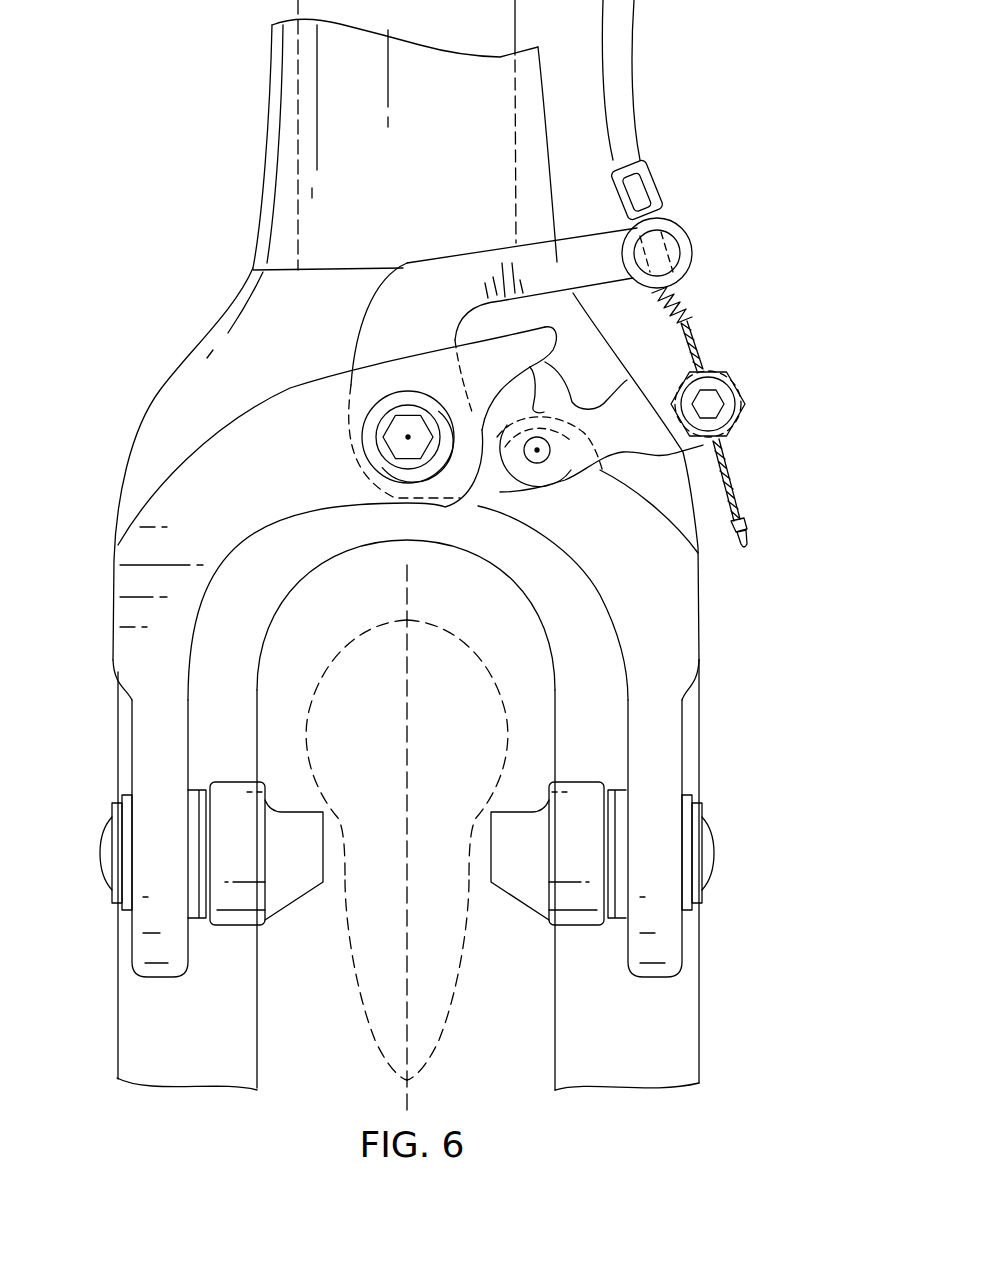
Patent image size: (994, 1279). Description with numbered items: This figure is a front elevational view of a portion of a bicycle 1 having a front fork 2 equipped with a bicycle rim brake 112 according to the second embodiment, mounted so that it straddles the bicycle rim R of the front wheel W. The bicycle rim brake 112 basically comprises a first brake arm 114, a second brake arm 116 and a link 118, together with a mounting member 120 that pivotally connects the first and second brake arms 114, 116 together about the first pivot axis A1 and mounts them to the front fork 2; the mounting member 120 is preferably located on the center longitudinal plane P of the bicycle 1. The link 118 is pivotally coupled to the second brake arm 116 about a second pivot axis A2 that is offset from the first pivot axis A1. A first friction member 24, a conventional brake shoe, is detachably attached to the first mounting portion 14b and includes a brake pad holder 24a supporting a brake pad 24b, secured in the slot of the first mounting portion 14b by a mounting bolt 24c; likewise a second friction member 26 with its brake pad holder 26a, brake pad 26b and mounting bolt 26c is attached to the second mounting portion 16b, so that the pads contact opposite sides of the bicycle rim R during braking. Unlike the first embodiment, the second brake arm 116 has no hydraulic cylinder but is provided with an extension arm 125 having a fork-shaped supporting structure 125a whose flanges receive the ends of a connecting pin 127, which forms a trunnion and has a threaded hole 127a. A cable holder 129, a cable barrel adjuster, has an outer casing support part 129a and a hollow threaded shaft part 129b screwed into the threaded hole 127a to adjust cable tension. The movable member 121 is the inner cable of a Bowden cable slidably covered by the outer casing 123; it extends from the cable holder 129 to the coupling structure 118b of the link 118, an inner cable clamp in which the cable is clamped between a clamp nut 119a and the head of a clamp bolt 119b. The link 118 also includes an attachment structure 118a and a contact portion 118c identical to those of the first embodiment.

The bicycle 1 is at (262, 103).
The front fork 2 is at (233, 305).
The first mounting portion 14b is at (131, 941).
The second mounting portion 16b is at (683, 940).
The bicycle rim brake 112 is at (168, 433).
The first brake arm 114 is at (108, 606).
The second brake arm 116 is at (690, 719).
The link 118 is at (599, 398).
The attachment structure 118a is at (513, 484).
The coupling structure 118b is at (733, 431).
The contact portion 118c is at (545, 375).
The clamp nut 119a is at (733, 383).
The clamp bolt 119b is at (745, 410).
The mounting member 120 is at (368, 455).
The movable member 121 is at (693, 350).
The outer casing 123 is at (631, 63).
The extension arm 125 is at (458, 250).
The supporting structure 125a is at (696, 226).
The connecting pin 127 is at (682, 258).
The threaded hole 127a is at (633, 257).
The cable holder 129 is at (670, 174).
The outer casing support part 129a is at (607, 197).
The hollow threaded shaft part 129b is at (688, 303).
The first friction member 24 is at (225, 765).
The brake pad holder 24a is at (238, 925).
The brake pad 24b is at (294, 905).
The mounting bolt 24c is at (102, 848).
The second friction member 26 is at (584, 765).
The brake pad holder 26a is at (577, 925).
The brake pad 26b is at (520, 905).
The mounting bolt 26c is at (711, 845).
The first pivot axis A1 is at (406, 437).
The second pivot axis A2 is at (537, 452).
The center longitudinal plane P is at (400, 595).
The front wheel W is at (472, 635).
The bicycle rim R is at (458, 1020).